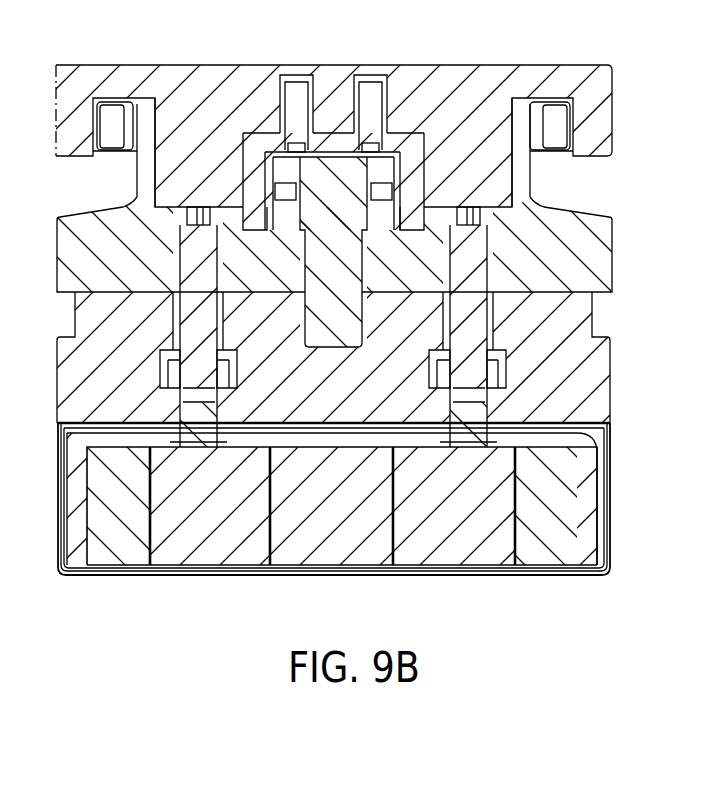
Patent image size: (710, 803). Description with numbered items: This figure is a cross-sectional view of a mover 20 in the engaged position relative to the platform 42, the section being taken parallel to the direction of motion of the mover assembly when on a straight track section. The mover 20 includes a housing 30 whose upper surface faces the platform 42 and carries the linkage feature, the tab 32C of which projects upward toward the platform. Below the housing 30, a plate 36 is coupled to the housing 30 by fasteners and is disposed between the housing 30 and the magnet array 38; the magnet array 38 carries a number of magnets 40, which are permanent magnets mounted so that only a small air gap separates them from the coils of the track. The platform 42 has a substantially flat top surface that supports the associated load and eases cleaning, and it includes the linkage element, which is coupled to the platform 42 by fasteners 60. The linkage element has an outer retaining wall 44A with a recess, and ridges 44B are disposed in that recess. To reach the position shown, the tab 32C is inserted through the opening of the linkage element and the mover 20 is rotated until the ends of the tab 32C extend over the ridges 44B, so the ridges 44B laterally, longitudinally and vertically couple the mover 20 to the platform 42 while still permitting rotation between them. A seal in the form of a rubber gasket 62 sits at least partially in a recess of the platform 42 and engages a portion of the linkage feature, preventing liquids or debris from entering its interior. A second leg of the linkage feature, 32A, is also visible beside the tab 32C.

The mover 20 is at (635, 572).
The housing 30 is at (57, 266).
The first clip leg 32A is at (137, 163).
The tab 32C is at (363, 168).
The plate 36 is at (57, 380).
The magnet array 38 is at (60, 473).
The magnets 40 is at (323, 533).
The platform 42 is at (140, 65).
The outer retaining wall 44A is at (272, 133).
The ridges 44B is at (387, 187).
The fasteners 60 is at (300, 103).
The rubber gasket 62 is at (127, 117).